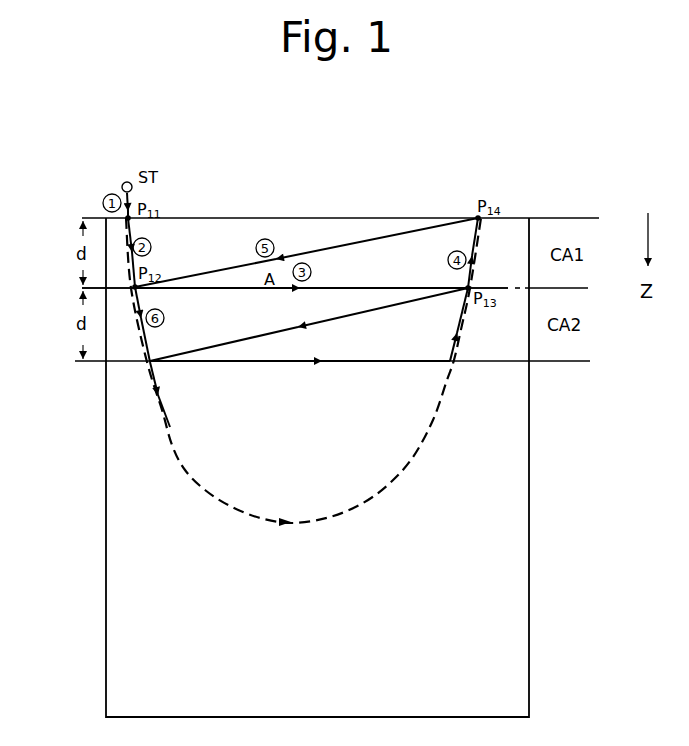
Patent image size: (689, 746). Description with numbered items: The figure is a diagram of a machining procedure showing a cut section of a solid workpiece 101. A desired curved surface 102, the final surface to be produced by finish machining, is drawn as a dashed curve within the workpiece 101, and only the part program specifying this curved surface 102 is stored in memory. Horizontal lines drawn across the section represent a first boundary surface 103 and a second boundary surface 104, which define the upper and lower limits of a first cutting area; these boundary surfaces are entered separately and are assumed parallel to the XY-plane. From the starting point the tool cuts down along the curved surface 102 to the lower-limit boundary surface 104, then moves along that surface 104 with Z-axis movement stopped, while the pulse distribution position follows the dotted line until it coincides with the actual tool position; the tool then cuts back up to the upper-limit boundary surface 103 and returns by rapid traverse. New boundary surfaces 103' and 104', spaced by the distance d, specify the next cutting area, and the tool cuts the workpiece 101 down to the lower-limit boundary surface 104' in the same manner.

The workpiece 101 is at (522, 681).
The desired curved surface 102 is at (177, 463).
The first boundary surface 103 is at (311, 239).
The second boundary surface 104 is at (303, 312).
The new first boundary surface 103' is at (259, 322).
The new second boundary surface 104' is at (311, 383).